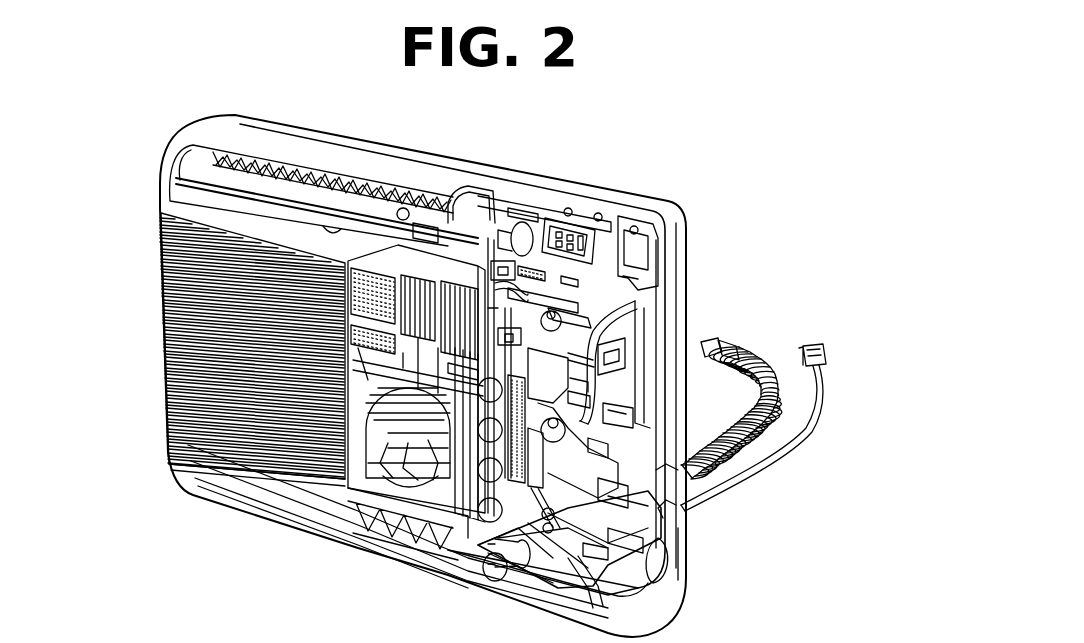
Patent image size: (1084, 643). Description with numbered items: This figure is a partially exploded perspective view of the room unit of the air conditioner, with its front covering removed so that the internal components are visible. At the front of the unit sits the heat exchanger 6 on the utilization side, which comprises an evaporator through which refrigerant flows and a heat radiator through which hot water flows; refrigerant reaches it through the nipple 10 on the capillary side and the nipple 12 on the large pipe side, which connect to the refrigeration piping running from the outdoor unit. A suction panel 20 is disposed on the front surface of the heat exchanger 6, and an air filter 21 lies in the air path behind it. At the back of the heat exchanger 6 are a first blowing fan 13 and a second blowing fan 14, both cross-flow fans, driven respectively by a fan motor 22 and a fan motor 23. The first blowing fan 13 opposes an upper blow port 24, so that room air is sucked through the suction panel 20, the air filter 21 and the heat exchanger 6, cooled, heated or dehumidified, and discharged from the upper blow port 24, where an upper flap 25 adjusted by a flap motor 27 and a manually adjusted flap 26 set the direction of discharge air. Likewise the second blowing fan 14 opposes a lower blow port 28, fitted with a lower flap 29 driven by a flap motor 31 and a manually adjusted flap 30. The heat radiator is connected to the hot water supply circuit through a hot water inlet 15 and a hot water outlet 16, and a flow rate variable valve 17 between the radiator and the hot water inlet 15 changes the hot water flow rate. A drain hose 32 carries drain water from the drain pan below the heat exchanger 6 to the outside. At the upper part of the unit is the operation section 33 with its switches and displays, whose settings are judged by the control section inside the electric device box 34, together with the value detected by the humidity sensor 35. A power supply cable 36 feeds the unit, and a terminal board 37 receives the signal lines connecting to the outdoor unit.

The heat exchanger 6 is at (160, 372).
The nipple 10 is at (528, 530).
The nipple 12 is at (575, 540).
The first blowing fan 13 is at (445, 215).
The second blowing fan 14 is at (407, 425).
The hot water inlet 15 is at (655, 537).
The hot water outlet 16 is at (603, 570).
The flow rate variable valve 17 is at (575, 393).
The suction panel 20 is at (185, 428).
The air filter 21 is at (363, 255).
The fan motor 22 is at (627, 293).
The fan motor 23 is at (660, 480).
The upper blow port 24 is at (170, 173).
The upper flap 25 is at (180, 158).
The flap 26 is at (208, 148).
The flap motor 27 is at (528, 222).
The lower blow port 28 is at (253, 480).
The lower flap 29 is at (213, 458).
The flap 30 is at (393, 517).
The flap motor 31 is at (490, 565).
The drain hose 32 is at (735, 343).
The operation section 33 is at (567, 225).
The electric device box 34 is at (615, 320).
The humidity sensor 35 is at (620, 283).
The power supply cable 36 is at (818, 382).
The terminal board 37 is at (677, 500).